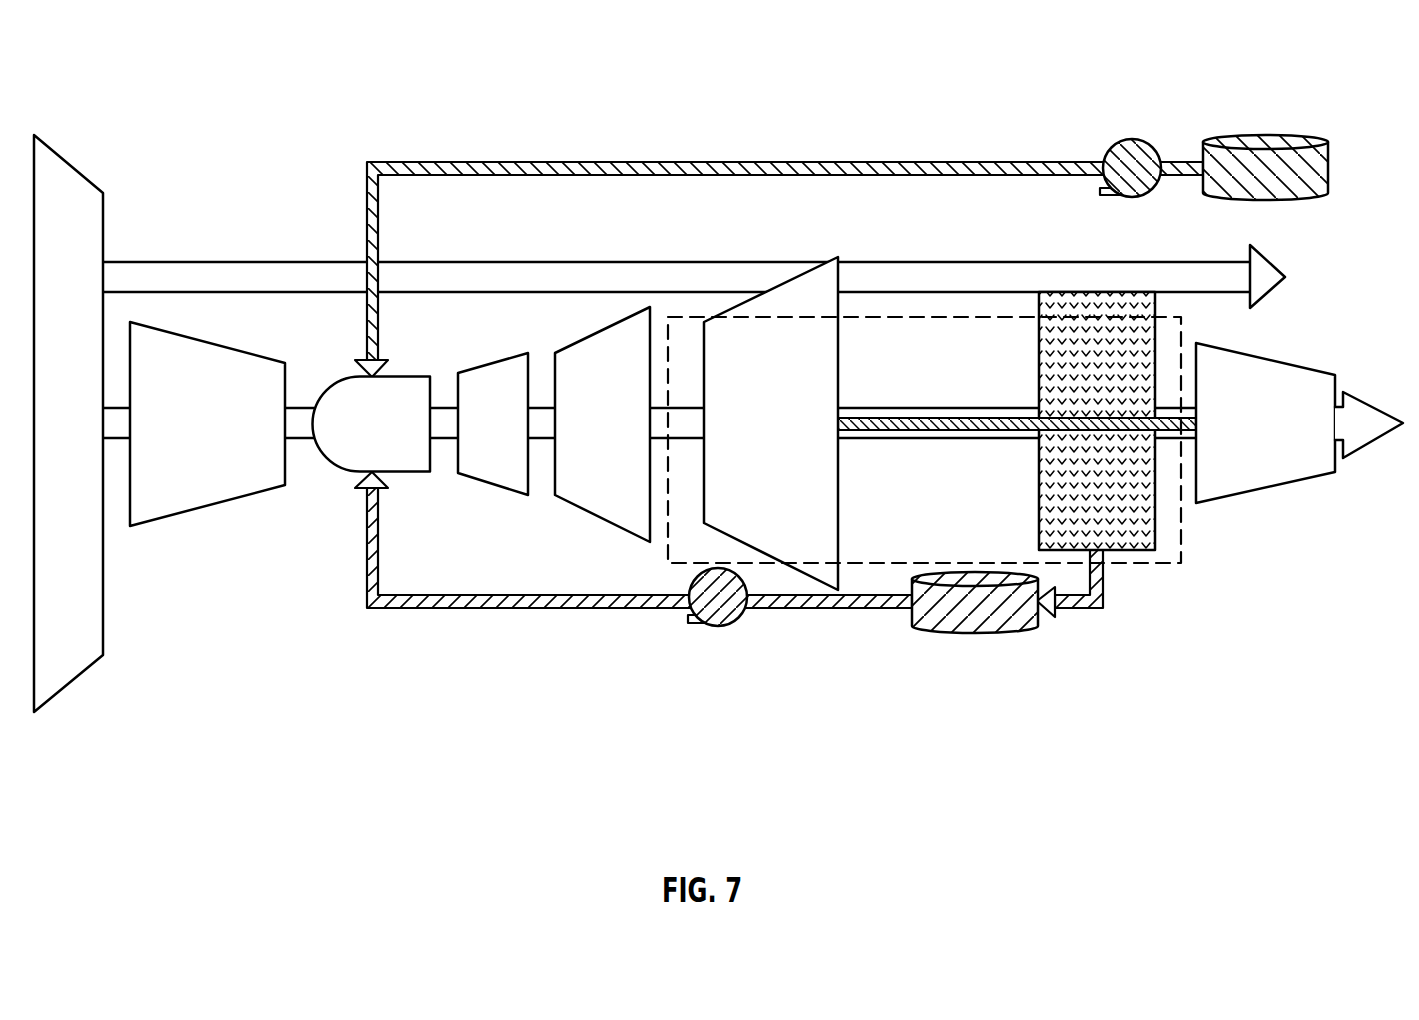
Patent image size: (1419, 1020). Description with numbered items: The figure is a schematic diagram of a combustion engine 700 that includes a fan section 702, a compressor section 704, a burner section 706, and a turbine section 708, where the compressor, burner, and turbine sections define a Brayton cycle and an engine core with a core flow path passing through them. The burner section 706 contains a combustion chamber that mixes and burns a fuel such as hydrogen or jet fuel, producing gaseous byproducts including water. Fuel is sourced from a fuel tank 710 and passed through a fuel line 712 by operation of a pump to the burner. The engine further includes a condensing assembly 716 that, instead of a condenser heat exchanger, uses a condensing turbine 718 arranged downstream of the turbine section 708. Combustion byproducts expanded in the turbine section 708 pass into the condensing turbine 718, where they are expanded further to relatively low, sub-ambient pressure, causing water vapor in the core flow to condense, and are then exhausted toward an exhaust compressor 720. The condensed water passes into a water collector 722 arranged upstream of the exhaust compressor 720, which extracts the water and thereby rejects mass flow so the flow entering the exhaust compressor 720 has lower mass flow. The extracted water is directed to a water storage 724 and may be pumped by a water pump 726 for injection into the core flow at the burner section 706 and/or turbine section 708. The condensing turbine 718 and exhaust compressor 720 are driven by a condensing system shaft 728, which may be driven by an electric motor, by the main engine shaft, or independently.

The combustion engine 700 is at (718, 377).
The fan section 702 is at (77, 707).
The compressor section 704 is at (221, 526).
The burner section 706 is at (406, 493).
The turbine section 708 is at (567, 528).
The fuel tank 710 is at (1328, 172).
The fuel line 712 is at (803, 162).
The condensing assembly 716 is at (1152, 565).
The condensing turbine 718 is at (838, 497).
The exhaust compressor 720 is at (1285, 485).
The water collector 722 is at (1155, 517).
The water storage 724 is at (972, 633).
The water pump 726 is at (718, 626).
The condensing system shaft 728 is at (915, 417).